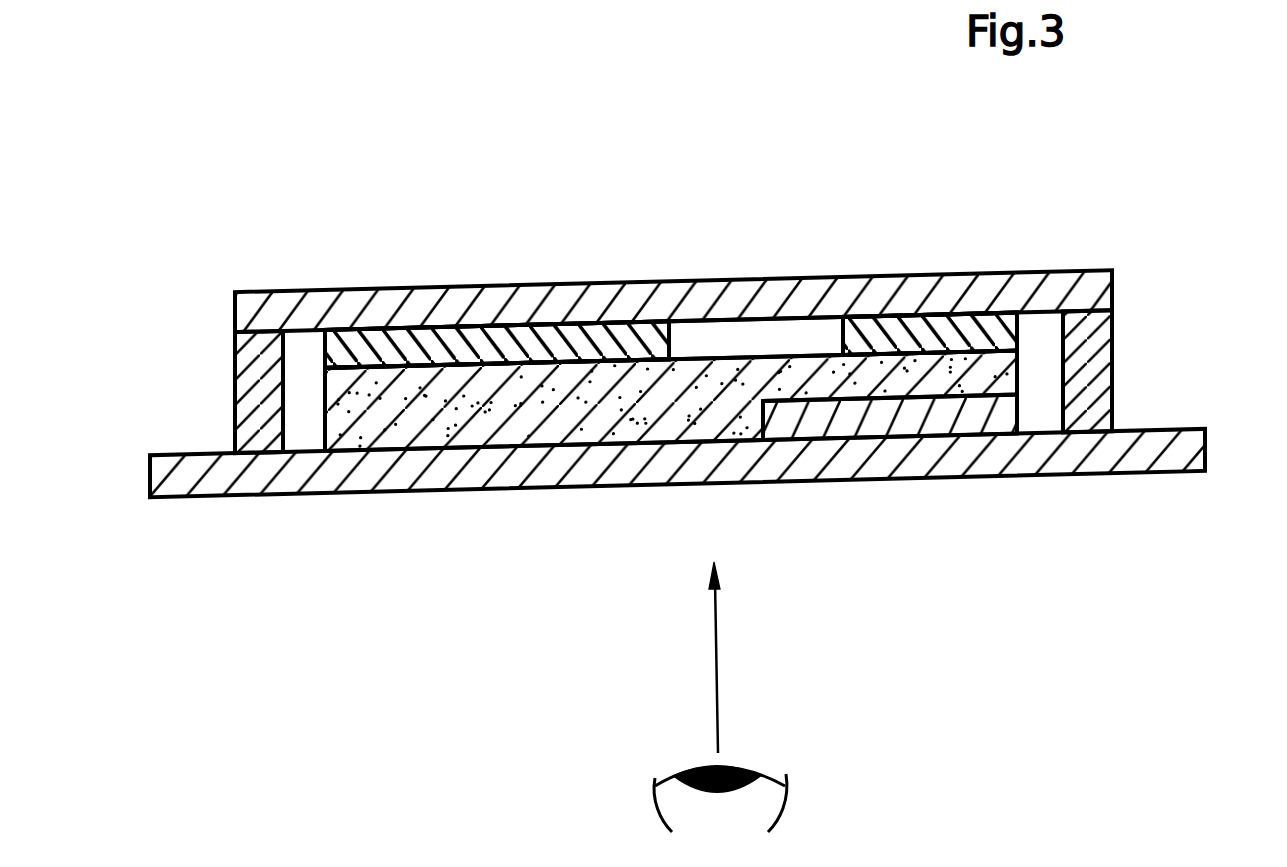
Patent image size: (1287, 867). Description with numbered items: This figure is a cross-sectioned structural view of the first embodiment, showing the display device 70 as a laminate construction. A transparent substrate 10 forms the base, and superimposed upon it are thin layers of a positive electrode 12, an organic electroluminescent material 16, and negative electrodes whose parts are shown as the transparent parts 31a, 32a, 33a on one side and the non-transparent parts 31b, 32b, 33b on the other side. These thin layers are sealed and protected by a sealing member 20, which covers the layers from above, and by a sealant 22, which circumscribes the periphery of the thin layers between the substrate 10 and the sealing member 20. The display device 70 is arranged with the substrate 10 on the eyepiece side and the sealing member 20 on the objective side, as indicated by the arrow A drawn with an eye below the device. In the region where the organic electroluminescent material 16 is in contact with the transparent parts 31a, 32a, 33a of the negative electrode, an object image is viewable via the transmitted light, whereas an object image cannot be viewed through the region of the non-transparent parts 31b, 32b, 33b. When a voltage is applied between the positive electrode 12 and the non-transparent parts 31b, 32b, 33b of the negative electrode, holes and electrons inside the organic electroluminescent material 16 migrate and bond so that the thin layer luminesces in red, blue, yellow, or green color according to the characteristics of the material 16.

The display device 70 is at (294, 257).
The sealing member 20 is at (556, 291).
The sealant 22 is at (1152, 354).
The transparent substrate 10 is at (1197, 447).
The transparent part of the negative electrode 31a is at (398, 343).
The transparent part of the negative electrode 32a is at (497, 242).
The transparent part of the negative electrode 33a is at (497, 243).
The non-transparent part of the negative electrode 31b is at (926, 335).
The non-transparent part of the negative electrode 32b is at (935, 259).
The non-transparent part of the negative electrode 33b is at (974, 259).
The organic electroluminescent material 16 is at (865, 383).
The positive electrode 12 is at (952, 422).
The arrow A is at (716, 645).